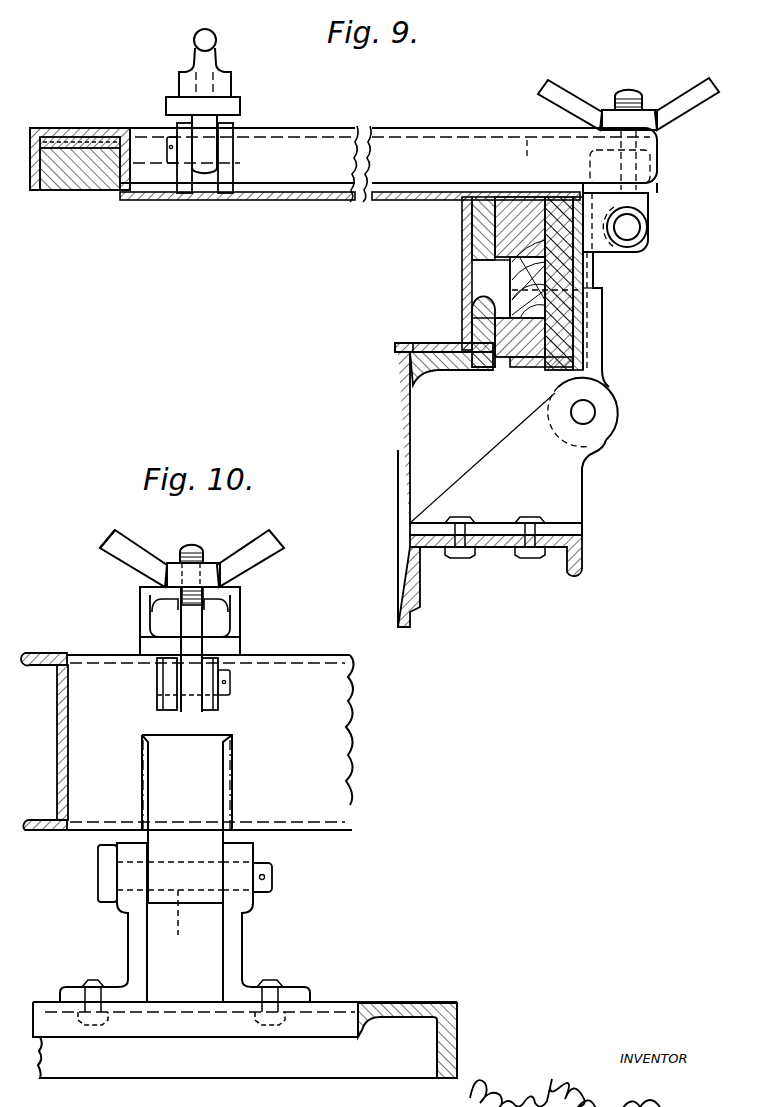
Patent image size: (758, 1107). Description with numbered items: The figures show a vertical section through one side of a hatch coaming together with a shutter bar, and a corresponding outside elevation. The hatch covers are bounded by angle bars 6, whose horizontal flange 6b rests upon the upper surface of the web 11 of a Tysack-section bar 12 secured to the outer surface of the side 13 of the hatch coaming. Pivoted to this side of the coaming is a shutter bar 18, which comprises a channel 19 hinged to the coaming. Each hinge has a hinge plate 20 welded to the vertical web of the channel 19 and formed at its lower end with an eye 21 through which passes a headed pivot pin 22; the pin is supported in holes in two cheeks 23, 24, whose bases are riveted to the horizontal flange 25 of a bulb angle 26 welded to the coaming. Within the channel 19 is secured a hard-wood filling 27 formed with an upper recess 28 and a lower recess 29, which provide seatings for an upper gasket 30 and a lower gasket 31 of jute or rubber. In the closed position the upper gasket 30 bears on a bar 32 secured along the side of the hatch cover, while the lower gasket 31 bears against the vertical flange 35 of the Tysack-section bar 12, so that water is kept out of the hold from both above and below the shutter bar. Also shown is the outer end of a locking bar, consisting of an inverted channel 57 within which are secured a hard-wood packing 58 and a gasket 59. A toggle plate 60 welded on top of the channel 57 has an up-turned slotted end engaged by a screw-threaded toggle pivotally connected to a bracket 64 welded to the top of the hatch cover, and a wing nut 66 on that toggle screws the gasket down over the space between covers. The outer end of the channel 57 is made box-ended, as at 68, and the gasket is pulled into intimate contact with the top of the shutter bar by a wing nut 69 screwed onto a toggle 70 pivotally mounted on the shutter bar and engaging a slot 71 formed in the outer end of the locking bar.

In FIG. 9, the angle bar 6 is at (466, 278).
In FIG. 9, the horizontal flange of side angle bar 6b is at (414, 343).
In FIG. 9, the web of Tysack-section bar 11 is at (462, 360).
In FIG. 9, the Tysack-section bar 12 is at (413, 412).
In FIG. 9, the side of hatch coaming 13 is at (400, 505).
In FIG. 9, the shutter bar 18 is at (614, 283).
In FIG. 9, the channel 19 is at (590, 262).
In FIG. 10, the channel 19 is at (345, 772).
In FIG. 9, the hinge plate 20 is at (592, 363).
In FIG. 10, the hinge plate 20 is at (220, 778).
In FIG. 9, the eye 21 is at (600, 410).
In FIG. 10, the eye 21 is at (178, 921).
In FIG. 9, the headed pivot pin 22 is at (592, 415).
In FIG. 10, the headed pivot pin 22 is at (265, 885).
In FIG. 9, the cheek 23 is at (565, 500).
In FIG. 10, the cheek 23 is at (138, 943).
In FIG. 10, the cheek 24 is at (232, 947).
In FIG. 9, the horizontal flange of bulb angle 25 is at (495, 552).
In FIG. 10, the horizontal flange of bulb angle 25 is at (410, 1005).
In FIG. 9, the bulb angle 26 is at (495, 559).
In FIG. 10, the bulb angle 26 is at (291, 1026).
In FIG. 9, the hard-wood filling 27 is at (548, 312).
In FIG. 9, the upper recess 28 is at (505, 282).
In FIG. 9, the lower recess 29 is at (548, 335).
In FIG. 9, the upper gasket 30 is at (525, 215).
In FIG. 9, the lower gasket 31 is at (503, 362).
In FIG. 9, the bar 32 is at (485, 225).
In FIG. 9, the vertical flange of Tysack-section bar 35 is at (398, 373).
In FIG. 9, the inverted channel 57 is at (100, 128).
In FIG. 10, the inverted channel 57 is at (228, 612).
In FIG. 9, the hard-wood packing 58 is at (118, 140).
In FIG. 10, the hard-wood packing 58 is at (101, 559).
In FIG. 9, the gasket 59 is at (322, 152).
In FIG. 10, the gasket 59 is at (158, 645).
In FIG. 9, the toggle plate 60 is at (232, 113).
In FIG. 9, the bracket 64 is at (184, 156).
In FIG. 9, the wing nut 66 is at (207, 40).
In FIG. 9, the box end 68 is at (575, 140).
In FIG. 10, the box end 68 is at (215, 628).
In FIG. 9, the wing nut 69 is at (572, 103).
In FIG. 10, the wing nut 69 is at (140, 555).
In FIG. 9, the toggle 70 is at (638, 96).
In FIG. 10, the toggle 70 is at (200, 550).
In FIG. 10, the slot 71 is at (222, 600).